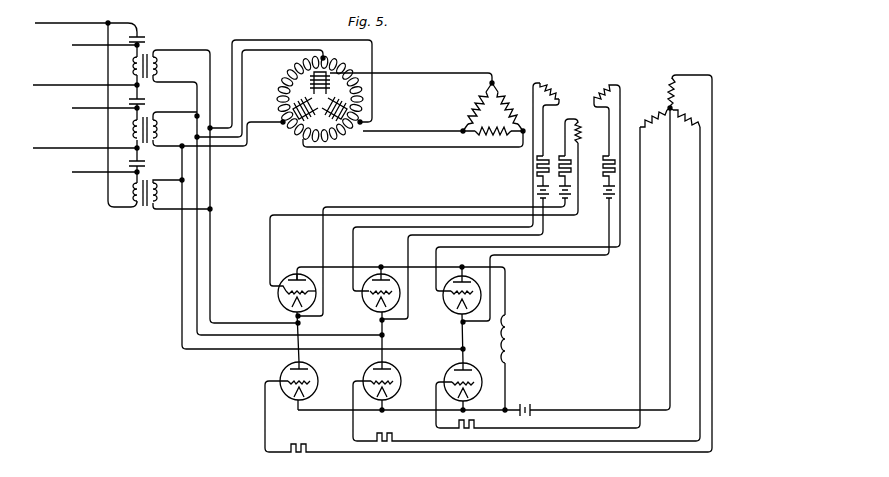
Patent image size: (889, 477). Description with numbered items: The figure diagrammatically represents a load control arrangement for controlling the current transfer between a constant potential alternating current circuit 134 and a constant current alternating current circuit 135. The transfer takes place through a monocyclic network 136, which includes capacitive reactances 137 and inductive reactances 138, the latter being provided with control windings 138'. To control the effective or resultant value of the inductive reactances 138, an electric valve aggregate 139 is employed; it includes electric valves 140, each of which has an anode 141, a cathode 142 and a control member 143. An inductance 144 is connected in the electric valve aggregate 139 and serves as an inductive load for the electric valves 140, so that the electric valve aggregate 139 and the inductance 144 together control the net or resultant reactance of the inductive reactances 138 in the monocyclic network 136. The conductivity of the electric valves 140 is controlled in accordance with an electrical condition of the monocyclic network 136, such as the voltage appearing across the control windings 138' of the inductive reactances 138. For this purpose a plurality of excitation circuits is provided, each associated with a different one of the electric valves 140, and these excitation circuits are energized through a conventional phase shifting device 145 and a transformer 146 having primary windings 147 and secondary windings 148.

The constant potential alternating current circuit 134 is at (47, 22).
The constant current alternating current circuit 135 is at (78, 47).
The monocyclic network 136 is at (173, 20).
The capacitive reactances 137 is at (144, 39).
The inductive reactances 138 is at (129, 130).
The control windings 138' is at (170, 143).
The electric valve aggregate 139 is at (362, 324).
The electric valves 140 is at (277, 296).
The anode 141 is at (290, 277).
The cathode 142 is at (288, 306).
The control member 143 is at (316, 291).
The inductance 144 is at (514, 338).
The phase shifting device 145 is at (367, 63).
The transformer 146 is at (595, 75).
The primary windings 147 is at (492, 130).
The secondary windings 148 is at (581, 119).